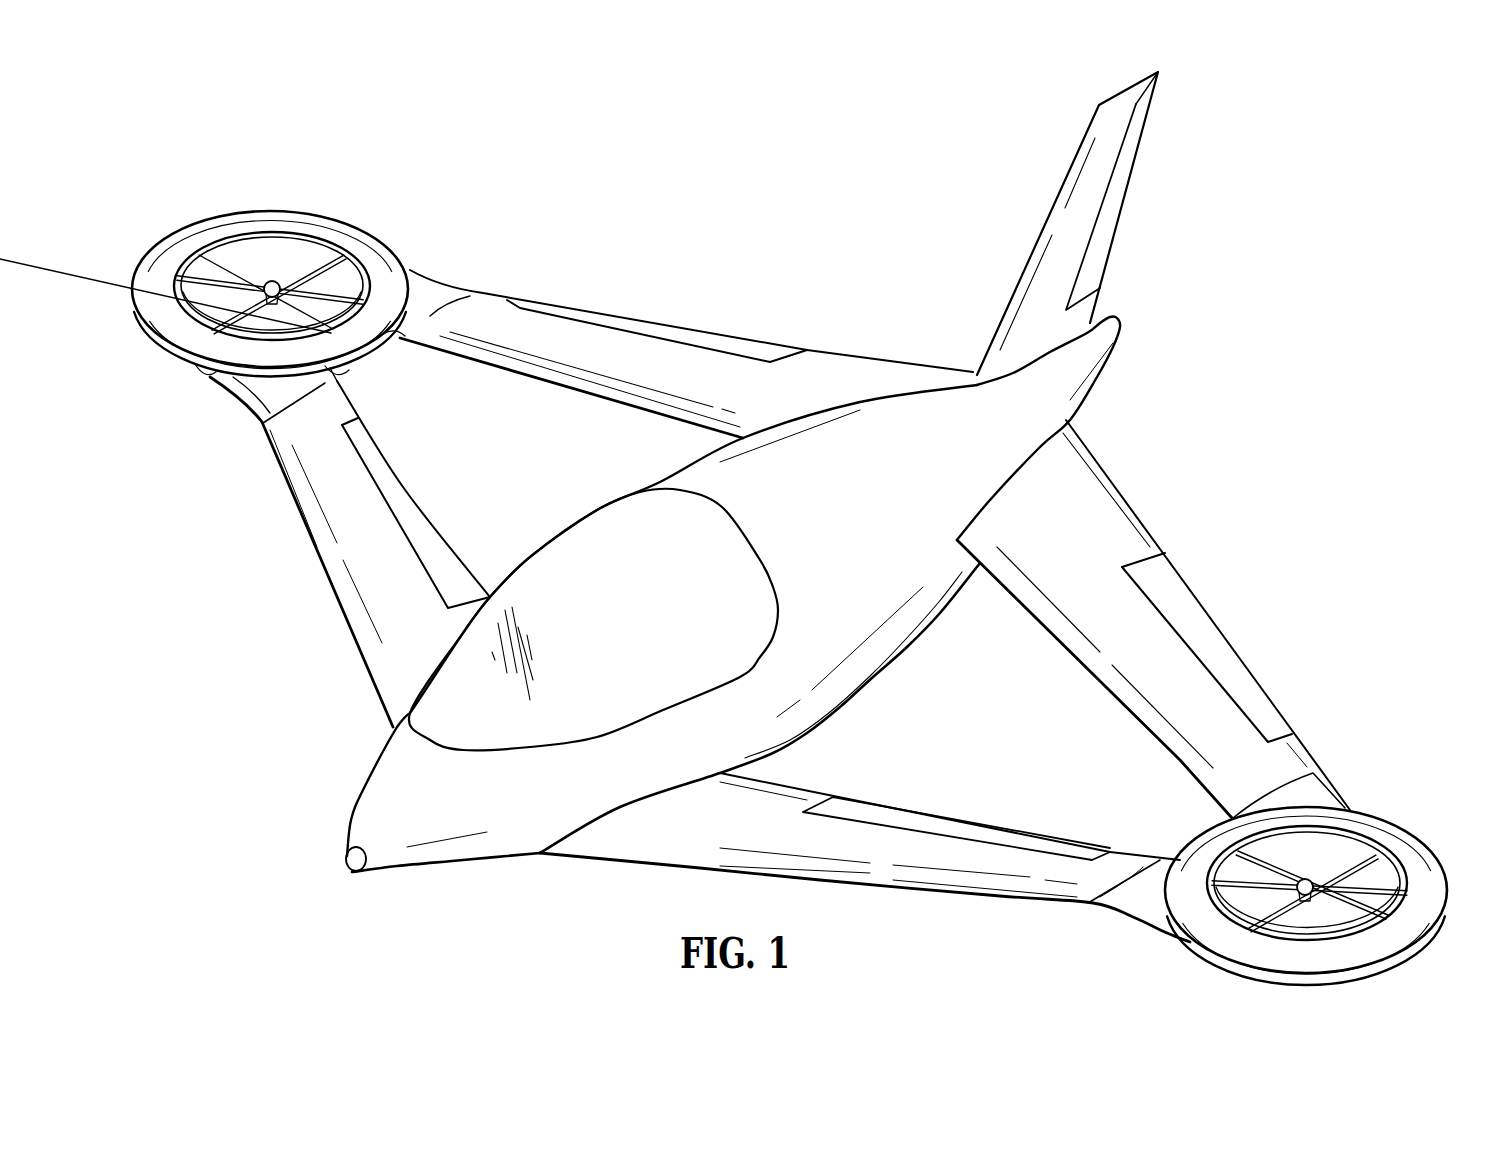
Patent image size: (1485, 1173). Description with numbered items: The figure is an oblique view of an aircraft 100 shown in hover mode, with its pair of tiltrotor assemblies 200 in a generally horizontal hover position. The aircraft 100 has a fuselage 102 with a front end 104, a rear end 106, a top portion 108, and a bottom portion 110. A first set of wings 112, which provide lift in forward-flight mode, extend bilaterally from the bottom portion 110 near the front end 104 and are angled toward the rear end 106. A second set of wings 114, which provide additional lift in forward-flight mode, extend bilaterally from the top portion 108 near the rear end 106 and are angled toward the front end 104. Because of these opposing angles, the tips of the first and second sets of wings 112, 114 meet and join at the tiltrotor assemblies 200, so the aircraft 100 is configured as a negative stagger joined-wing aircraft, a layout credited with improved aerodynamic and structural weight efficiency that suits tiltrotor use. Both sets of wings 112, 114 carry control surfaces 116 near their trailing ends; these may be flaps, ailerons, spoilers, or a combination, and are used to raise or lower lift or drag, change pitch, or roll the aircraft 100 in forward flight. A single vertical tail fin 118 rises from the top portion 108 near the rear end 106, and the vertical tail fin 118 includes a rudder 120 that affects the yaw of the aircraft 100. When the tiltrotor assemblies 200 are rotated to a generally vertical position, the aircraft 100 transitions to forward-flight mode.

The aircraft 100 is at (160, 128).
The fuselage 102 is at (850, 392).
The front end 104 is at (345, 878).
The rear end 106 is at (1112, 320).
The top portion 108 is at (698, 482).
The bottom portion 110 is at (474, 867).
The first set of wings 112 is at (354, 556).
The second set of wings 114 is at (503, 310).
The control surfaces 116 is at (673, 333).
The vertical tail fin 118 is at (1073, 215).
The rudder 120 is at (1118, 187).
The tiltrotor assemblies 200 is at (264, 204).